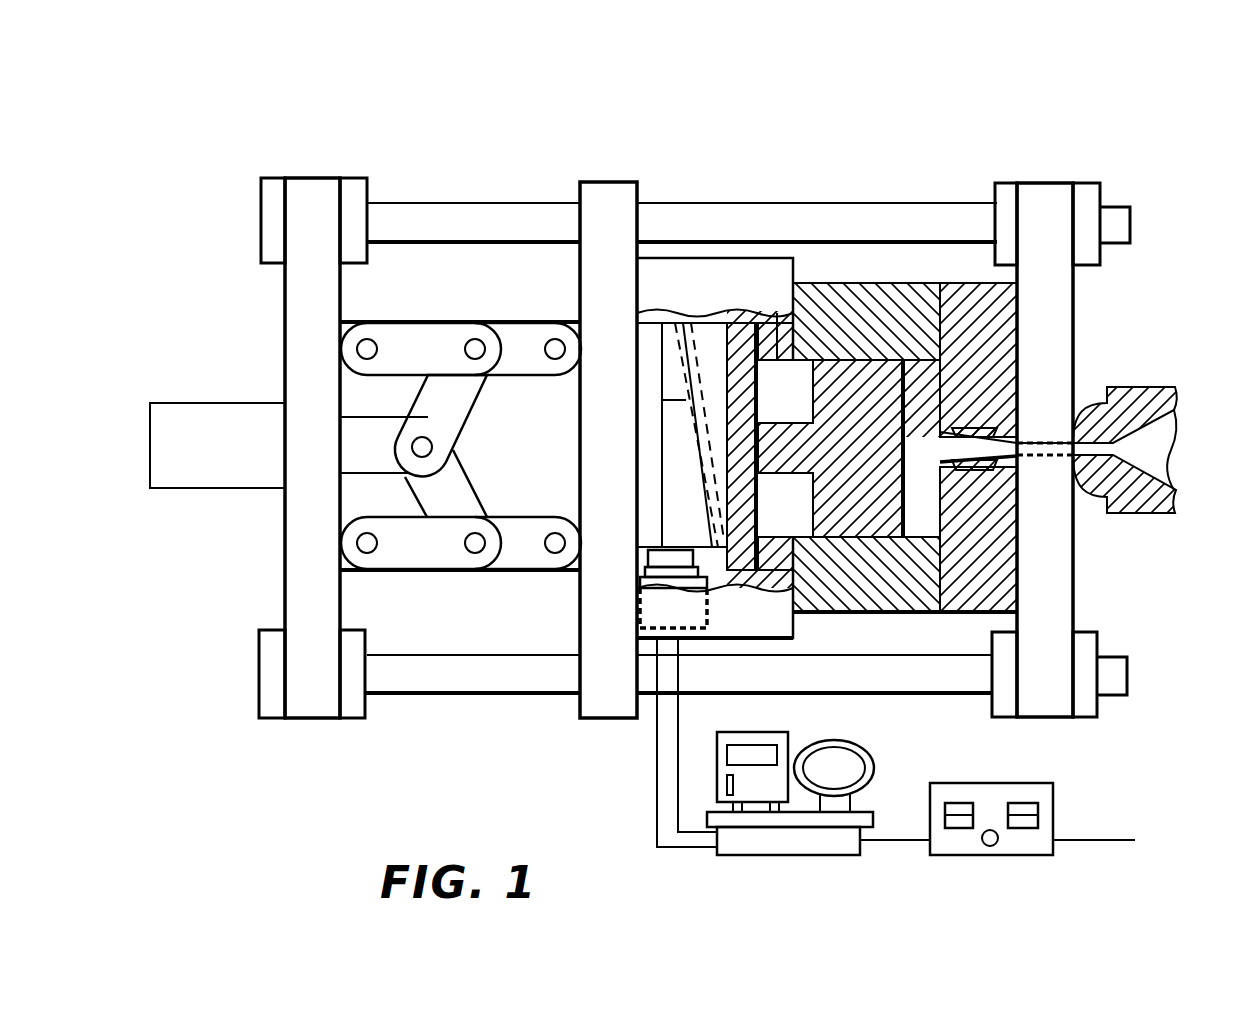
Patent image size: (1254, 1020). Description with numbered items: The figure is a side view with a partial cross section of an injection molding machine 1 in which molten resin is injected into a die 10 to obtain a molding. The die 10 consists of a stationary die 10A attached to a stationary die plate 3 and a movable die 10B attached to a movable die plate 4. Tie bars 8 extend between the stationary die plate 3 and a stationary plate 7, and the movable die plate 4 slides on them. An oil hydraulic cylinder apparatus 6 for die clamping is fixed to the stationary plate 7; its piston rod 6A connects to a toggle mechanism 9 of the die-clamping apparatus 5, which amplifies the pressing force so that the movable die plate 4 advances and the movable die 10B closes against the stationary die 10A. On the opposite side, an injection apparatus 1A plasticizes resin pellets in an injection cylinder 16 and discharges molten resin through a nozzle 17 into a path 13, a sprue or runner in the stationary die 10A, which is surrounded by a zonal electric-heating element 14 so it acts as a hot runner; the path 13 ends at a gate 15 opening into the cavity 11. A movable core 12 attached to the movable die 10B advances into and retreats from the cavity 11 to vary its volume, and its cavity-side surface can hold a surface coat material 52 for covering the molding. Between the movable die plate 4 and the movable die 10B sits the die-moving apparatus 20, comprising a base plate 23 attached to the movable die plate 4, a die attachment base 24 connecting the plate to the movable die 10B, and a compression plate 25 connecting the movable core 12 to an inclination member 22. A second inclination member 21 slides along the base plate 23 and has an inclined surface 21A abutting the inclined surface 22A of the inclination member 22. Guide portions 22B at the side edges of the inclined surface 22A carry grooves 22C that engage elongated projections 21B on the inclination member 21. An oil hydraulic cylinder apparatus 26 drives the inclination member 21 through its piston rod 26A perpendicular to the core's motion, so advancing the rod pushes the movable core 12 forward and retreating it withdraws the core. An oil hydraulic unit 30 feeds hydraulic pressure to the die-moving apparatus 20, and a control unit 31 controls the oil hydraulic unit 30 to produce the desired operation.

The injection molding machine 1 is at (1130, 720).
The injection apparatus 1A is at (1180, 377).
The stationary die plate 3 is at (1047, 180).
The movable die plate 4 is at (577, 718).
The die-clamping apparatus 5 is at (398, 182).
The oil hydraulic cylinder apparatus 6 is at (182, 418).
The piston rod 6A is at (376, 484).
The stationary plate 7 is at (300, 178).
The tie bars 8 is at (458, 203).
The toggle mechanism 9 is at (430, 573).
The die 10 is at (935, 283).
The stationary die 10A is at (960, 303).
The movable die 10B is at (845, 295).
The cavity 11 is at (923, 507).
The movable core 12 is at (857, 380).
The path 13 is at (975, 443).
The zonal electric-heating element 14 is at (952, 448).
The gate 15 is at (965, 462).
The injection cylinder 16 is at (1130, 387).
The nozzle 17 is at (1095, 490).
The die-moving apparatus 20 is at (717, 240).
The inclination member 21 is at (665, 470).
The inclined surface 21A is at (700, 385).
The elongated projection 21B is at (678, 320).
The inclination member 22 is at (708, 337).
The inclined surface 22A is at (690, 420).
The guide portions 22B is at (693, 367).
The groove 22C is at (678, 323).
The base plate 23 is at (645, 512).
The die attachment base 24 is at (735, 272).
The compression plate 25 is at (748, 337).
The oil hydraulic cylinder apparatus 26 is at (640, 630).
The piston rod 26A is at (663, 557).
The oil hydraulic unit 30 is at (798, 840).
The control unit 31 is at (967, 843).
The surface coat material 52 is at (907, 510).